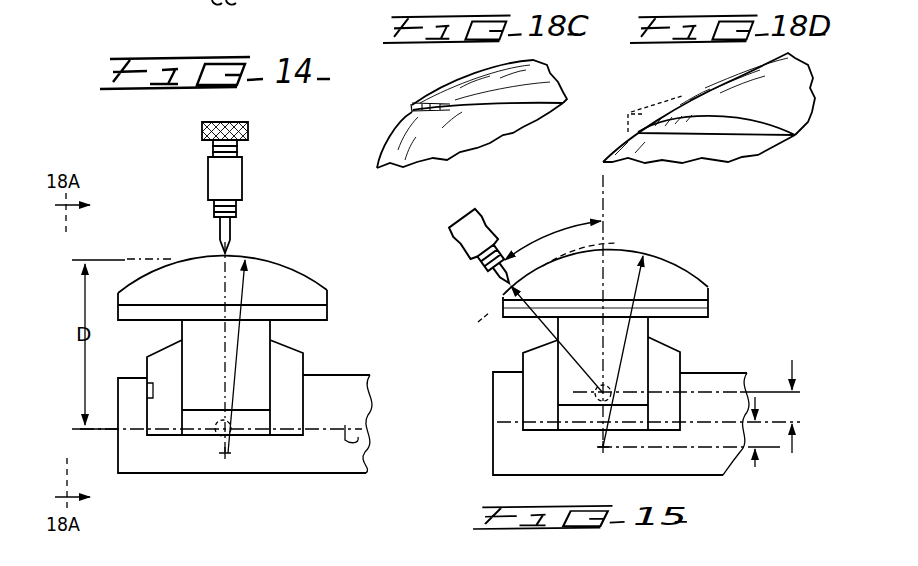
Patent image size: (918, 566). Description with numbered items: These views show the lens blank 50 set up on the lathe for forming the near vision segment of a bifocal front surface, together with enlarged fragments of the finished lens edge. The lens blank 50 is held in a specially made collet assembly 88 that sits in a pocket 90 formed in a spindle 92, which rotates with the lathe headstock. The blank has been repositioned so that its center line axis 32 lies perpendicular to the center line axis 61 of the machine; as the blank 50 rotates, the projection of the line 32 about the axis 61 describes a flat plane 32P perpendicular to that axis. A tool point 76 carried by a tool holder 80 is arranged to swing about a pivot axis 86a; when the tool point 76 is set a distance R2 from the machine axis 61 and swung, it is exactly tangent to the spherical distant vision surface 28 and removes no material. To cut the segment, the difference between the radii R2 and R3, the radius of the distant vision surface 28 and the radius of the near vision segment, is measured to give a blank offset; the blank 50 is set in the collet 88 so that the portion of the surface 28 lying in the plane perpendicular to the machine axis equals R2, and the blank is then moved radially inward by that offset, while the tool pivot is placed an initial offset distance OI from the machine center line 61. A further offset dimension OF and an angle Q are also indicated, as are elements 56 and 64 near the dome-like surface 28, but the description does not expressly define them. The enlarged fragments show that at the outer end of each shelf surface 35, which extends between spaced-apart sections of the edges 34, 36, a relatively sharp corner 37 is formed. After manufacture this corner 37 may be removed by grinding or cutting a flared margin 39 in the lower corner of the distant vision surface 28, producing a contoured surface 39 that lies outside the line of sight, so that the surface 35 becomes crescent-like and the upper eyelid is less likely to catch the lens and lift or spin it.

In FIG. 14, the spherical lens front surface 28 is at (292, 270).
In FIG. 15, the spherical lens front surface 28 is at (678, 267).
In FIG. 14, the center line axis of the lens blank 32 is at (193, 245).
In FIG. 14, the flat plane 32P is at (189, 275).
In FIG. 18C, the edge 34 is at (465, 95).
In FIG. 18C, the shelf surface 35 is at (424, 108).
In FIG. 18D, the shelf surface 35 is at (695, 123).
In FIG. 18C, the edge 36 is at (453, 110).
In FIG. 18C, the sharp corner 37 is at (411, 105).
In FIG. 18D, the sharp corner 37 is at (626, 107).
In FIG. 18D, the flared margin 39 is at (677, 107).
In FIG. 14, the lens blank 50 is at (241, 351).
In FIG. 15, the lens blank 50 is at (600, 343).
In FIG. 15, the dome base plate 56 is at (706, 309).
In FIG. 14, the center line axis of the machine 61 is at (358, 440).
In FIG. 14, the dome member 64 is at (215, 275).
In FIG. 15, the dome member 64 is at (585, 272).
In FIG. 14, the tool point 76 is at (190, 220).
In FIG. 15, the tool point 76 is at (481, 258).
In FIG. 14, the tool holder 80 is at (255, 161).
In FIG. 15, the tool holder 80 is at (507, 281).
In FIG. 14, the pivot axis 86a is at (233, 425).
In FIG. 14, the collet assembly 88 is at (162, 357).
In FIG. 15, the collet assembly 88 is at (601, 373).
In FIG. 14, the pocket 90 is at (150, 388).
In FIG. 14, the spindle 92 is at (352, 385).
In FIG. 15, the spindle 92 is at (621, 423).
In FIG. 14, the radius R-2 R2 is at (240, 356).
In FIG. 15, the radius R-2 R2 is at (620, 354).
In FIG. 15, the radius R-3 R3 is at (561, 343).
In FIG. 15, the tilt angle Q is at (553, 236).
In FIG. 15, the initial offset distance OI is at (792, 395).
In FIG. 15, the final offset OF is at (753, 450).